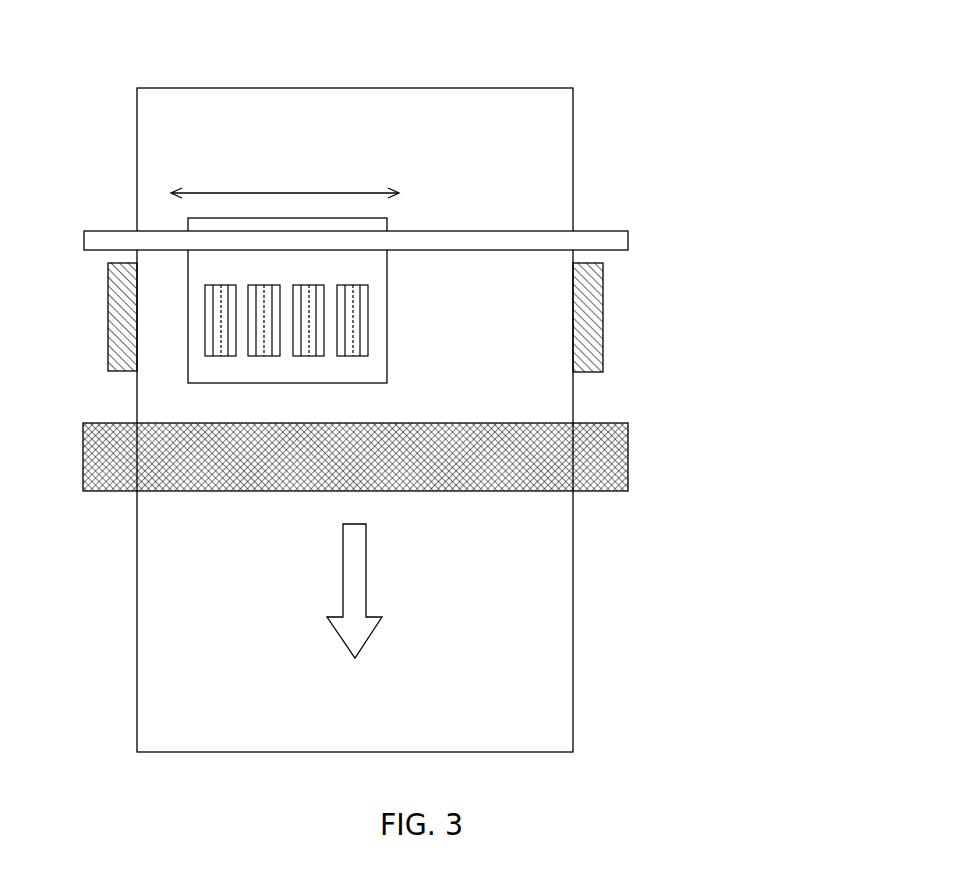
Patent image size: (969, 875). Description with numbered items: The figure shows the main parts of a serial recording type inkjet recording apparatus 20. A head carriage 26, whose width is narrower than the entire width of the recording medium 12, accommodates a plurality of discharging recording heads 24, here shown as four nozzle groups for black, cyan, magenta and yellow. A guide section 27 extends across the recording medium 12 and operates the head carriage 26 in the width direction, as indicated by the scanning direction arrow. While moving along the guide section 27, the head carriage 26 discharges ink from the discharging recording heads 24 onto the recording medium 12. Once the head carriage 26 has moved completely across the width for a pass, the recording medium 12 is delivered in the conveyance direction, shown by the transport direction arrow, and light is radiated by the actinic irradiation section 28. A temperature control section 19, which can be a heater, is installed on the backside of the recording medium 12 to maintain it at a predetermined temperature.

The serial recording type inkjet recording apparatus 20 is at (834, 44).
The recording medium 12 is at (466, 113).
The head carriage 26 is at (210, 373).
The discharging recording heads 24 is at (208, 322).
The guide section 27 is at (601, 243).
The temperature control section 19 is at (594, 315).
The actinic irradiation section 28 is at (595, 491).